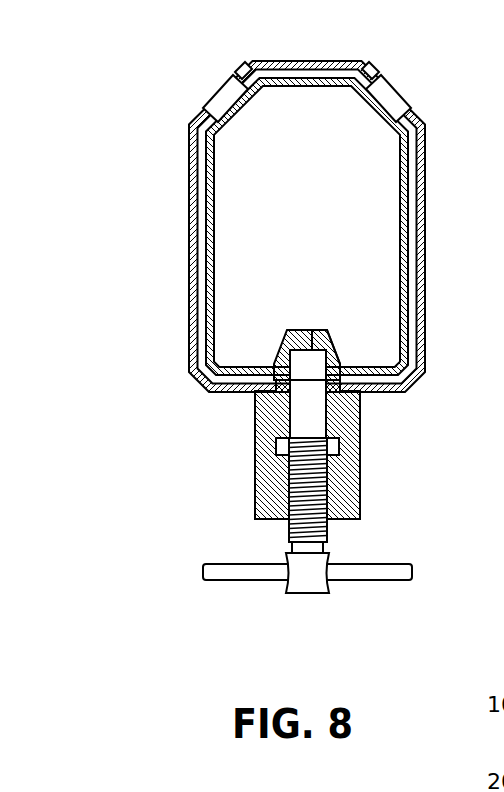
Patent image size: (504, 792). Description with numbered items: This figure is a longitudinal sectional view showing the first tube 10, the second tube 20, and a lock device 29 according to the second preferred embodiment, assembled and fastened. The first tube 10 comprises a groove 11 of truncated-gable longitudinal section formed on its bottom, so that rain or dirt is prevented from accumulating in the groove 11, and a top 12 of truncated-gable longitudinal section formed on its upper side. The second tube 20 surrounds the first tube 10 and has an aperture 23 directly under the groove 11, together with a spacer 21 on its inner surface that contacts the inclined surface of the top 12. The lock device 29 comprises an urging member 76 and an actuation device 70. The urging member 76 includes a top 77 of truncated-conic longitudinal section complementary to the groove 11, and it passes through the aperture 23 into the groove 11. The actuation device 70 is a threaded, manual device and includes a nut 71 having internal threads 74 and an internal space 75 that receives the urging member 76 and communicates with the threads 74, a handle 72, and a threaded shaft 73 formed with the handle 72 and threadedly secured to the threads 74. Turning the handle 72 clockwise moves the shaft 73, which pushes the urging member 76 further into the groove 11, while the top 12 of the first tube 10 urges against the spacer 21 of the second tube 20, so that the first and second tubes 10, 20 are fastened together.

The first tube 10 is at (206, 173).
The groove 11 is at (309, 351).
The top 12 is at (213, 96).
The second tube 20 is at (190, 234).
The spacer 21 is at (244, 66).
The aperture 23 is at (262, 387).
The lock device 29 is at (133, 477).
The actuation device 70 is at (294, 595).
The nut 71 is at (352, 503).
The handle 72 is at (400, 569).
The threaded shaft 73 is at (294, 526).
The internal threads 74 is at (290, 484).
The internal space 75 is at (280, 455).
The urging member 76 is at (323, 352).
The top 77 is at (291, 352).